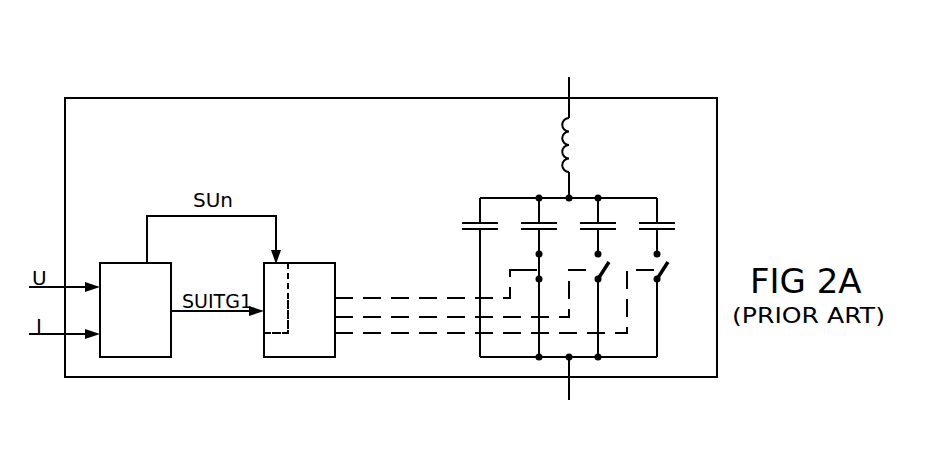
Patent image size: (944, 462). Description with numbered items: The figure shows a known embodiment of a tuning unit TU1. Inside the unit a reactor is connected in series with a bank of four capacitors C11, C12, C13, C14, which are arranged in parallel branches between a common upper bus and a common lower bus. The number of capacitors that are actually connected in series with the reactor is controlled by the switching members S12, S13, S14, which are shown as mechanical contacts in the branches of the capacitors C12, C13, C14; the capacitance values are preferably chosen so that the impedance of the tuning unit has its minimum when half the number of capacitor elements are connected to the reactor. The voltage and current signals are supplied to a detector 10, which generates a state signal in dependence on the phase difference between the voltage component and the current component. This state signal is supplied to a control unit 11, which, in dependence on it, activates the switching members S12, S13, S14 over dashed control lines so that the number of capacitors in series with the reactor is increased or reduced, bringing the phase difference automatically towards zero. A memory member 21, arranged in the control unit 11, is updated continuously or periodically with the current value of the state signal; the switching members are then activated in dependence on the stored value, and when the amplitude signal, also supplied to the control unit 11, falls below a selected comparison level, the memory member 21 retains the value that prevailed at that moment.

The tuning unit TU1 is at (360, 98).
The detector 10 is at (126, 262).
The control unit 11 is at (306, 262).
The memory member 21 is at (292, 315).
The capacitor C11 is at (467, 222).
The capacitor C12 is at (525, 222).
The capacitor C13 is at (607, 222).
The capacitor C14 is at (668, 222).
The switching member S12 is at (537, 270).
The switching member S13 is at (604, 266).
The switching member S14 is at (668, 261).